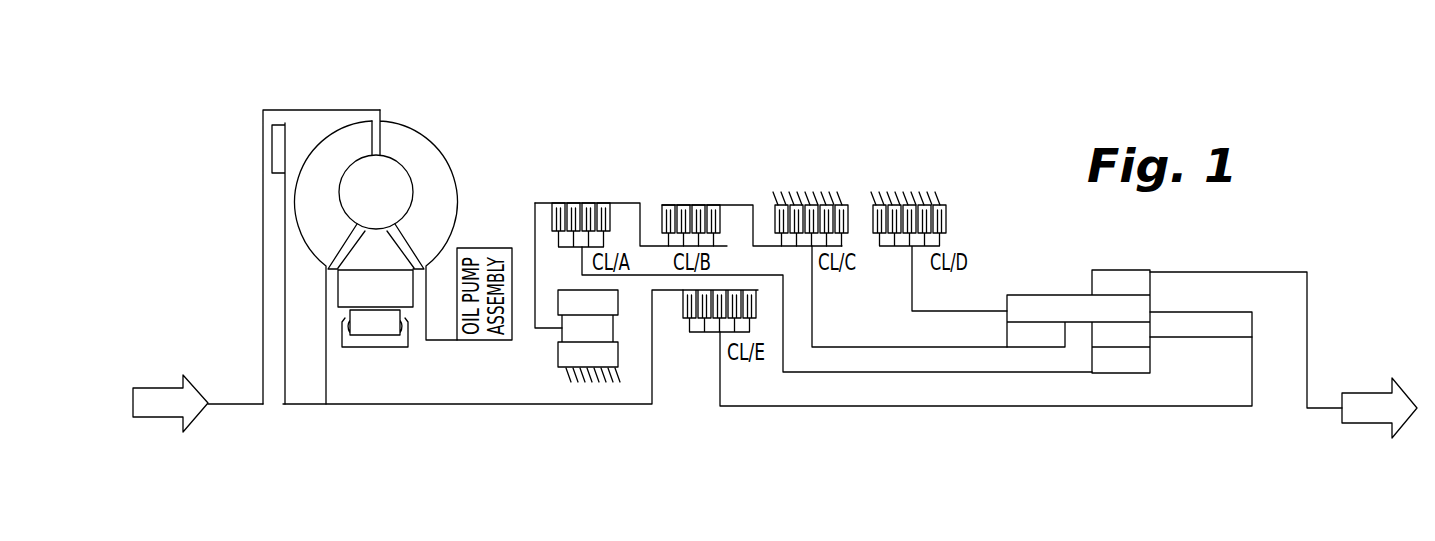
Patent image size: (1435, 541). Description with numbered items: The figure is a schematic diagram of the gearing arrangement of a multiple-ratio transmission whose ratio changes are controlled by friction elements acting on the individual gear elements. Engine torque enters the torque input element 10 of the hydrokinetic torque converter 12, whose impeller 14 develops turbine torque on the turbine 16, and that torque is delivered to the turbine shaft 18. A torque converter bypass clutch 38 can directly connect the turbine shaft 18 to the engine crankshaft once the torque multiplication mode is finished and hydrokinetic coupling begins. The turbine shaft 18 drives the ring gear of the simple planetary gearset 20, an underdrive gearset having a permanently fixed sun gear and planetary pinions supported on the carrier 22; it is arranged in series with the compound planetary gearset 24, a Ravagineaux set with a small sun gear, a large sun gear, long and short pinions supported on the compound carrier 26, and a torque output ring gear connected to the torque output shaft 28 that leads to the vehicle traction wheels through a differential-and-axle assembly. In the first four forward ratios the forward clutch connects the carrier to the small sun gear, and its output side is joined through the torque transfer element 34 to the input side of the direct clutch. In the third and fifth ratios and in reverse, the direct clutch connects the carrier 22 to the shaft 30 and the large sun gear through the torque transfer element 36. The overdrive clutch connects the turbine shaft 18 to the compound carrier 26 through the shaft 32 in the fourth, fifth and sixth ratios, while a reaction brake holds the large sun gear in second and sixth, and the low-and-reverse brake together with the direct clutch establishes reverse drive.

The torque input element 10 is at (232, 405).
The hydrokinetic torque converter 12 is at (442, 145).
The impeller 14 is at (446, 217).
The turbine 16 is at (331, 217).
The turbine shaft 18 is at (467, 405).
The simple planetary gearset 20 is at (625, 357).
The carrier 22 is at (530, 237).
The compound planetary gearset 24 is at (1155, 358).
The compound carrier 26 is at (1253, 339).
The torque output shaft 28 is at (917, 373).
The shaft 30 is at (878, 347).
The shaft 32 is at (828, 407).
The torque transfer element 34 is at (640, 220).
The torque transfer element 36 is at (754, 224).
The torque converter bypass clutch 38 is at (275, 105).